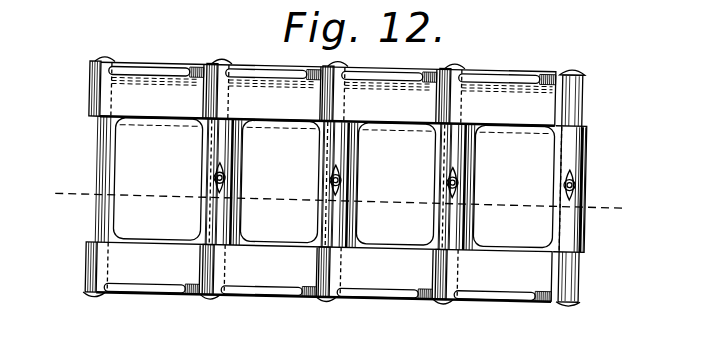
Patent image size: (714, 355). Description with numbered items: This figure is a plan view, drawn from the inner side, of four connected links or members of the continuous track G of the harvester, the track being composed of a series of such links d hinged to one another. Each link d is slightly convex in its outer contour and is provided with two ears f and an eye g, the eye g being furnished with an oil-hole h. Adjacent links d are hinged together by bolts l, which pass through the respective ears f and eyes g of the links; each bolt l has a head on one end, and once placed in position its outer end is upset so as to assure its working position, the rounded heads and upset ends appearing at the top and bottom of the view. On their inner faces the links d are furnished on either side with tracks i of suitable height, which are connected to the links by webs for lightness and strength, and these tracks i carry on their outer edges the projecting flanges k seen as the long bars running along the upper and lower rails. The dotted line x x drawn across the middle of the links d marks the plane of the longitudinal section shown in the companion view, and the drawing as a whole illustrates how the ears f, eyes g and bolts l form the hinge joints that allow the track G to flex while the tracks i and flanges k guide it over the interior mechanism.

The continuous track G is at (339, 194).
The link d is at (333, 183).
The ear f is at (90, 92).
The eye g is at (244, 137).
The oil-hole h is at (237, 175).
The track i is at (326, 181).
The projecting flange k is at (141, 75).
The bolt l is at (98, 172).
The dotted line x x is at (339, 200).